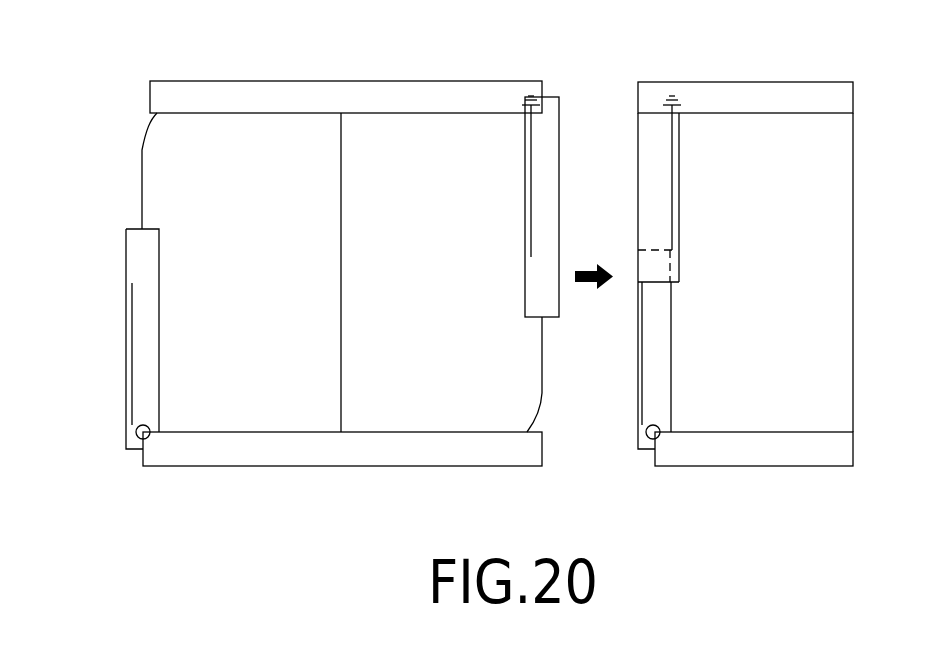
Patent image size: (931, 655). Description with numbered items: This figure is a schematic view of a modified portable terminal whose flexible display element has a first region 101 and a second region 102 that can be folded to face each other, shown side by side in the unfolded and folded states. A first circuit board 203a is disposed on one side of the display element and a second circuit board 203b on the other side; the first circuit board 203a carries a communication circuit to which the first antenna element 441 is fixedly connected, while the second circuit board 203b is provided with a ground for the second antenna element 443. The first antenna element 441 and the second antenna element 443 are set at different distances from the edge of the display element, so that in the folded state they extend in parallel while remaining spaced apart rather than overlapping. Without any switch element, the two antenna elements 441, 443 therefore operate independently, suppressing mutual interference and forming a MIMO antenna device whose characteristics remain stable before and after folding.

The first region 101 is at (435, 138).
The second region 102 is at (227, 138).
The first circuit board 203a is at (360, 448).
The second circuit board 203b is at (338, 100).
The first antenna element 441 is at (134, 373).
The second antenna element 443 is at (532, 202).